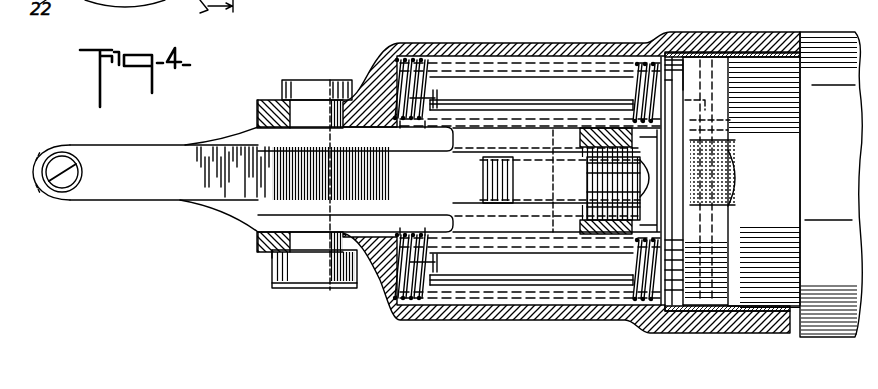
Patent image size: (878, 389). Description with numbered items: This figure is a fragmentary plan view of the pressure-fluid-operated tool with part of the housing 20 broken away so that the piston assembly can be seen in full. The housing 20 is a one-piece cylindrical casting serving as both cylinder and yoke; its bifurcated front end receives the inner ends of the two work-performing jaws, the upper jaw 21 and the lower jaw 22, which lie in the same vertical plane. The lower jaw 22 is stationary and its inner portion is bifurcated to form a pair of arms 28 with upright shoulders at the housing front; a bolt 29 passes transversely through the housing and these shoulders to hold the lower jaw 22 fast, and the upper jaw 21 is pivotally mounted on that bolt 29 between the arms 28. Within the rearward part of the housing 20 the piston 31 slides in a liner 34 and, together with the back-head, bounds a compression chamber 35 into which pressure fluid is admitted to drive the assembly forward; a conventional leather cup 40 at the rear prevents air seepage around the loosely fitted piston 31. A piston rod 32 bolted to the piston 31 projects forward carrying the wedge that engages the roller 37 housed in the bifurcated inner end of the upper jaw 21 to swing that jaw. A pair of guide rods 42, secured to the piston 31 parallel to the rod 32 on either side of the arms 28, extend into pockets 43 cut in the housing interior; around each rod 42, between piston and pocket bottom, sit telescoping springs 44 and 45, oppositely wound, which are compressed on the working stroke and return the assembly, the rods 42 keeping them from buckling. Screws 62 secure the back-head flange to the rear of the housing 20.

The cylindrical housing 20 is at (650, 36).
The upper jaw 21 is at (132, 158).
The lower jaw 22 is at (207, 225).
The arms 28 is at (268, 127).
The bolt 29 is at (300, 246).
The piston 31 is at (679, 58).
The piston rod 32 is at (738, 203).
The liner 34 is at (754, 51).
The compression chamber 35 is at (783, 185).
The roller 37 is at (528, 171).
The leather cup 40 is at (719, 262).
The guide rods 42 is at (476, 77).
The pockets 43 is at (532, 62).
The spring 44 is at (407, 60).
The spring 45 is at (441, 62).
The screws 62 is at (839, 168).